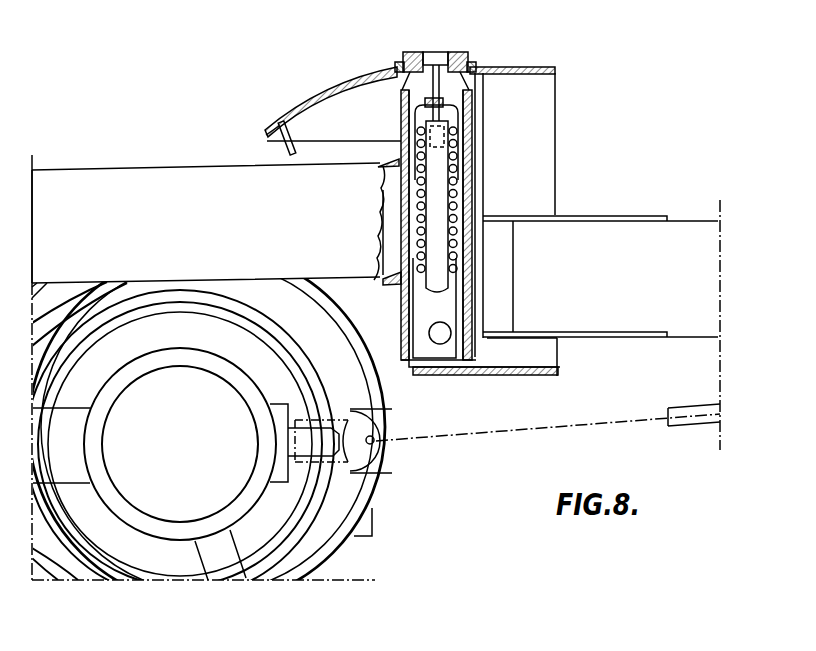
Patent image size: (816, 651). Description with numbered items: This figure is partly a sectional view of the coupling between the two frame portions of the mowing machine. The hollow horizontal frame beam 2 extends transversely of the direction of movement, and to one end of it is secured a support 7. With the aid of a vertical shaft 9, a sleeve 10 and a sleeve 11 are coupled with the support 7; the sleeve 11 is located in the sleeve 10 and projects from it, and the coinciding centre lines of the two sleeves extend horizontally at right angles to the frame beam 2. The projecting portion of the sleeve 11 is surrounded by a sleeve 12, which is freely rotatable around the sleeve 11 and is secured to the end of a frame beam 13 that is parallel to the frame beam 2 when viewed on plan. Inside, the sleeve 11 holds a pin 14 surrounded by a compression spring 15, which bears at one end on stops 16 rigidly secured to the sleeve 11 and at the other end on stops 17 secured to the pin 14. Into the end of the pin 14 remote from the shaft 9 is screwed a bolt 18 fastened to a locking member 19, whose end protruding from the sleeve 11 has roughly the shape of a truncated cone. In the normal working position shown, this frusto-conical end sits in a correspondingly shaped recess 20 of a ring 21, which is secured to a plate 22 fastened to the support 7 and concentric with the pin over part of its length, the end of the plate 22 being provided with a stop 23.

The frame beam 2 is at (687, 232).
The support 7 is at (552, 140).
The vertical shaft 9 is at (437, 333).
The sleeve 10 is at (401, 308).
The sleeve 11 is at (465, 232).
The sleeve 12 is at (398, 130).
The frame beam 13 is at (174, 184).
The pin 14 is at (437, 190).
The compression spring 15 is at (418, 242).
The stops 16 is at (455, 270).
The stops 17 is at (450, 129).
The bolt 18 is at (445, 100).
The locking member 19 is at (422, 88).
The recess 20 is at (437, 52).
The ring 21 is at (407, 52).
The plate 22 is at (342, 81).
The stop 23 is at (280, 122).